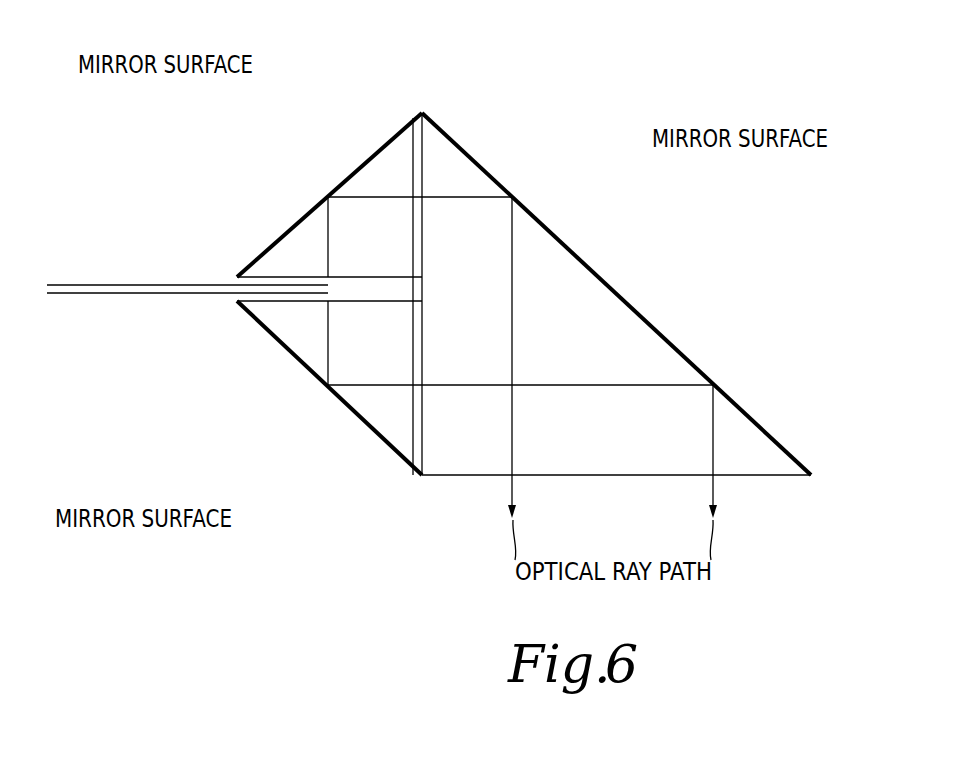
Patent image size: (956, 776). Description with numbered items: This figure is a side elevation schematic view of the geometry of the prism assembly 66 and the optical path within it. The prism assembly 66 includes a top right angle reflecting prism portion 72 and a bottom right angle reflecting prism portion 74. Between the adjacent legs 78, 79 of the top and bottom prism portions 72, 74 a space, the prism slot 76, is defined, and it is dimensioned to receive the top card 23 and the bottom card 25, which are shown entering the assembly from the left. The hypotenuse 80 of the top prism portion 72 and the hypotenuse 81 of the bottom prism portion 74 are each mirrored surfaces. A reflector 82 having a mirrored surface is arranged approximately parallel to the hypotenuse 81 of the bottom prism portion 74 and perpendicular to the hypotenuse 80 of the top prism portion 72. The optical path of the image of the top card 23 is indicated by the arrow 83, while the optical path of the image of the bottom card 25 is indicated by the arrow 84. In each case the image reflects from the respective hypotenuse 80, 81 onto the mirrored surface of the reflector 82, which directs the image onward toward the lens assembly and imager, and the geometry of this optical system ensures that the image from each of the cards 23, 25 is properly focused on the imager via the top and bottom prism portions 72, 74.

The top card 23 is at (141, 272).
The bottom card 25 is at (141, 306).
The prism assembly 66 is at (466, 62).
The top prism portion 72 is at (303, 165).
The bottom prism portion 74 is at (303, 414).
The prism slot 76 is at (216, 267).
The leg of top prism portion 78 is at (372, 277).
The leg of bottom prism portion 79 is at (365, 301).
The hypotenuse of top prism portion 80 is at (300, 218).
The hypotenuse of bottom prism portion 81 is at (273, 338).
The reflector 82 is at (623, 285).
The optical path of top card image 83 is at (513, 316).
The optical path of bottom card image 84 is at (565, 383).